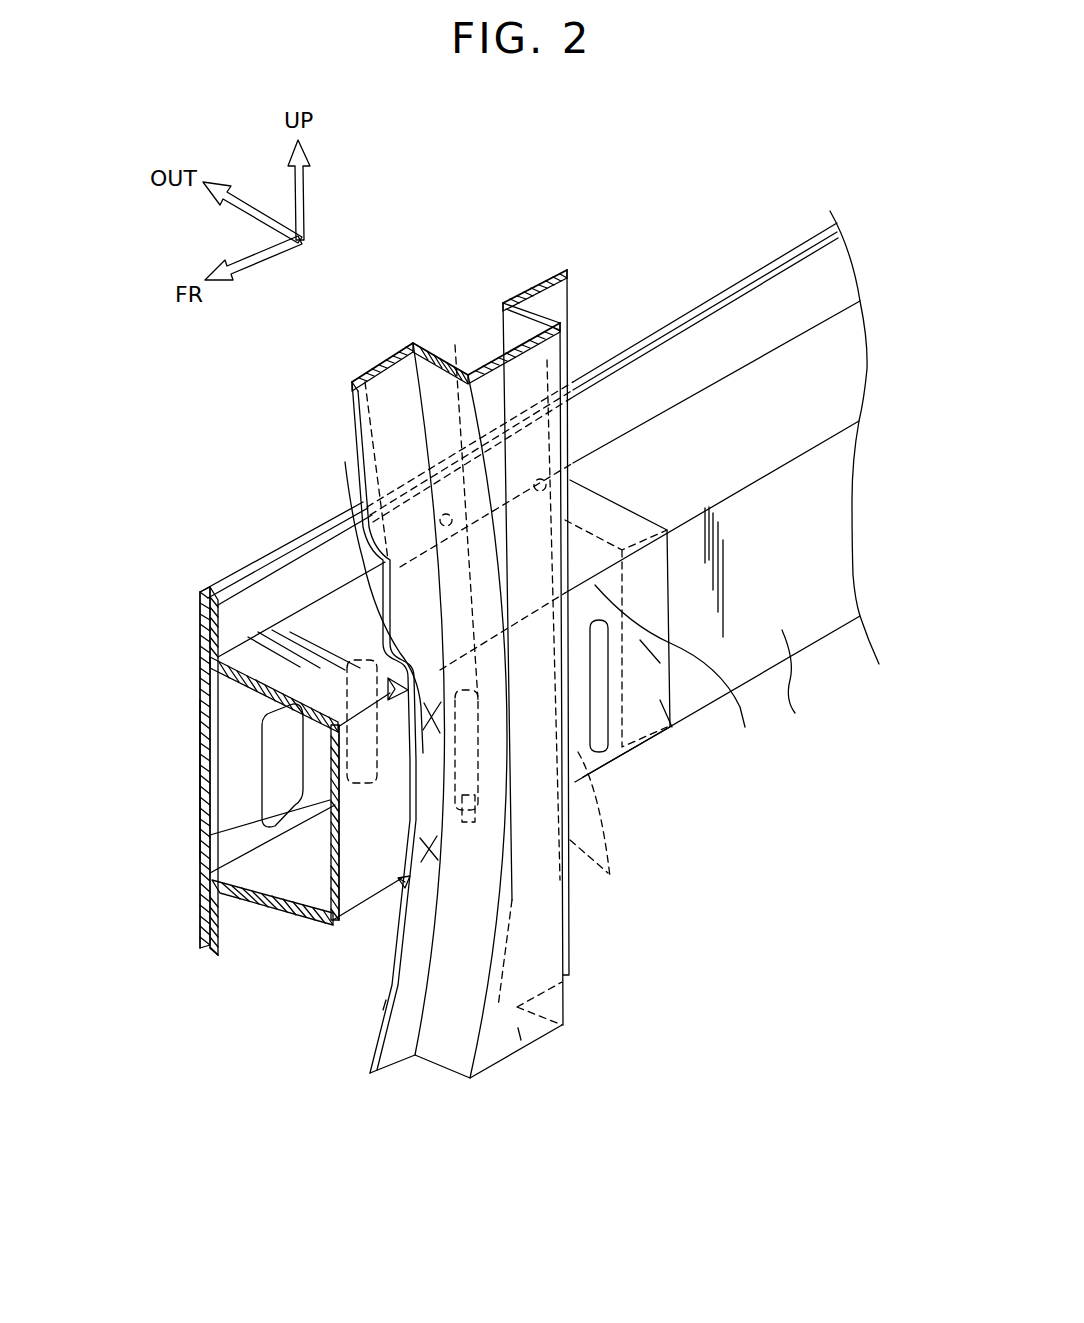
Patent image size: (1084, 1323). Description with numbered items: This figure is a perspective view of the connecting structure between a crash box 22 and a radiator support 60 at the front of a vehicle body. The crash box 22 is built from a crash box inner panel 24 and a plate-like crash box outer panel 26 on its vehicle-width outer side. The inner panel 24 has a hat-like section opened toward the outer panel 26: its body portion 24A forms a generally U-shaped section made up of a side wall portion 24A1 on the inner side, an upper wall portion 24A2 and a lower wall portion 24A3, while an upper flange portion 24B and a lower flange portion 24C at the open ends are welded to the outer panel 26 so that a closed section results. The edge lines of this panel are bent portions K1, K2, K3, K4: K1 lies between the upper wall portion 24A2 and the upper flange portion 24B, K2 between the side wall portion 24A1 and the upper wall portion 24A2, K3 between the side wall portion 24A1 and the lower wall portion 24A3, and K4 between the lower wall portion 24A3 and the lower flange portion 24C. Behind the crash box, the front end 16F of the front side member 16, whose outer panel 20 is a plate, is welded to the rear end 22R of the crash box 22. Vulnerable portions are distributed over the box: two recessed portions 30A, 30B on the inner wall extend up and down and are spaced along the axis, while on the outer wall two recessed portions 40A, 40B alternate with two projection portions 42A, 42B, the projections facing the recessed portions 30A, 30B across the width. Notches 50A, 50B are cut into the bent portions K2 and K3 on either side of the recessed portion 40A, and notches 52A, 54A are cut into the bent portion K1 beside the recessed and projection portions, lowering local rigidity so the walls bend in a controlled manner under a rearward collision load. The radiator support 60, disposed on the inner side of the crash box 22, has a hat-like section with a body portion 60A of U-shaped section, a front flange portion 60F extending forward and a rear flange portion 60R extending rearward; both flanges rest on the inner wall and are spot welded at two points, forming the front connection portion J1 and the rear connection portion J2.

The front side member 16 is at (676, 273).
The front end of the front side member 16F is at (660, 663).
The front side member outer panel 20 is at (721, 283).
The crash box 22 is at (232, 492).
The rear end of the crash box 22R is at (648, 695).
The crash box inner panel 24 is at (253, 789).
The body portion 24A is at (287, 975).
The side wall portion 24A1 is at (330, 870).
The upper wall portion 24A2 is at (260, 660).
The lower wall portion 24A3 is at (270, 905).
The upper flange portion 24B is at (270, 590).
The lower flange portion 24C is at (240, 930).
The crash box outer panel 26 is at (205, 775).
The recessed portion 30A is at (437, 1043).
The recessed portion 30B is at (603, 720).
The recessed portion 40A is at (265, 800).
The recessed portion 40B is at (358, 440).
The projection portion 42A is at (340, 580).
The projection portion 42B is at (456, 360).
The notch 50A is at (361, 594).
The notch 50B is at (390, 1005).
The notch 52A is at (368, 350).
The notch 54A is at (590, 385).
The radiator support 60 is at (575, 1003).
The body portion 60A is at (521, 1028).
The front flange portion 60F is at (403, 1045).
The rear flange portion 60R is at (573, 955).
The front connection portion J1 is at (410, 790).
The rear connection portion J2 is at (689, 771).
The bent portion K1 is at (285, 620).
The bent portion K2 is at (680, 670).
The bent portion K3 is at (672, 727).
The bent portion K4 is at (222, 950).